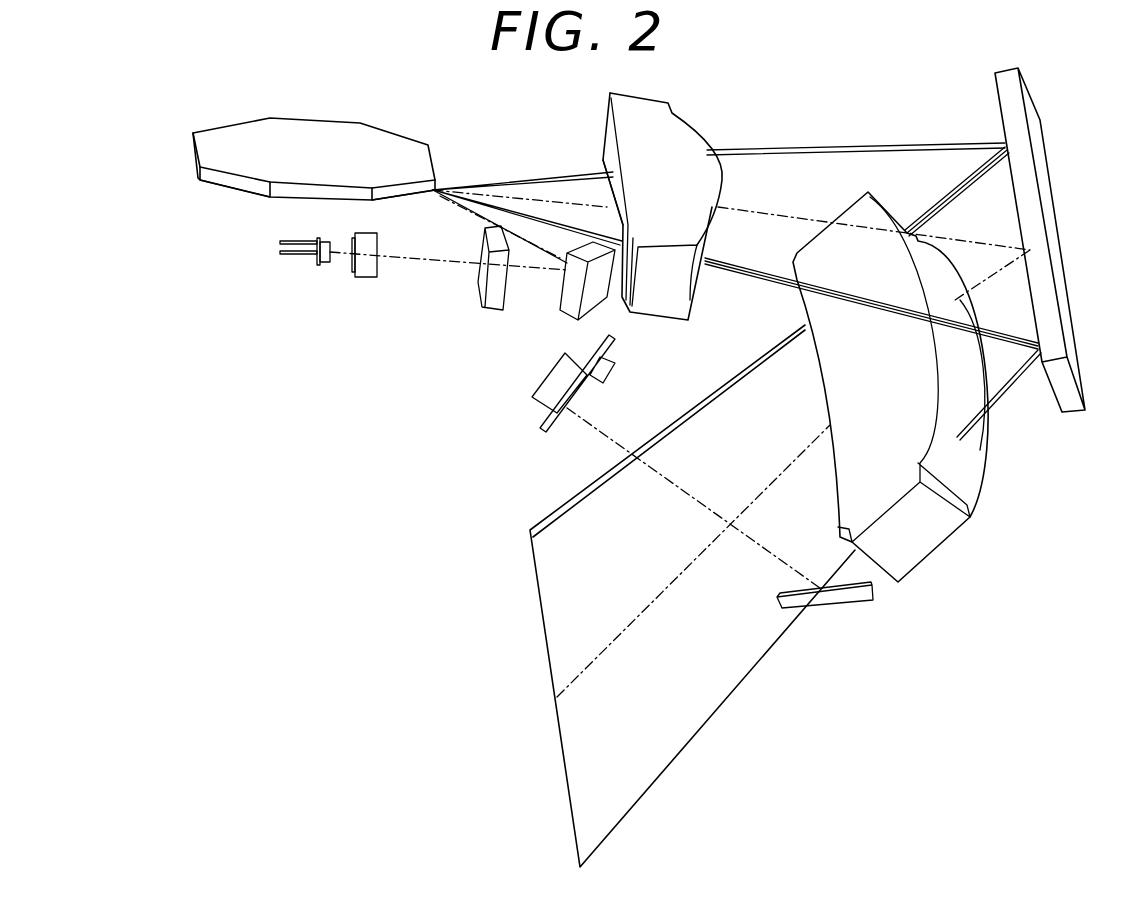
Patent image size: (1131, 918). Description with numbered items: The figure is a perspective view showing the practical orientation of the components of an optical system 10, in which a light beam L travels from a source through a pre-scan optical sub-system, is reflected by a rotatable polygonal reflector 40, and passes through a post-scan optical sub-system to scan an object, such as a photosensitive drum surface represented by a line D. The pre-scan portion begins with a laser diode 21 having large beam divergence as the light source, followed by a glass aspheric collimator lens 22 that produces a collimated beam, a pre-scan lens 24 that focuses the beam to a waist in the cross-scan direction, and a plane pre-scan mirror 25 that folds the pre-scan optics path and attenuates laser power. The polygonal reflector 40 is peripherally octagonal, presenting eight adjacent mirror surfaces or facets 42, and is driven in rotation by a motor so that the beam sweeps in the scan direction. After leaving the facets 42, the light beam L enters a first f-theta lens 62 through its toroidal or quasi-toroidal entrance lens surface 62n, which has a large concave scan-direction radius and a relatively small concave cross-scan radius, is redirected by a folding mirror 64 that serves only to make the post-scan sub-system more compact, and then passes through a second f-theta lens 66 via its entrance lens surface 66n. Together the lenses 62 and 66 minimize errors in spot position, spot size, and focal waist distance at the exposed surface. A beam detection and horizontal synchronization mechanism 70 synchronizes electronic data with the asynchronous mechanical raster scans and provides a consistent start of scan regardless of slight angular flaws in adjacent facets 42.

The optical system 10 is at (453, 495).
The laser diode 21 is at (317, 263).
The glass aspheric collimator lens 22 is at (367, 277).
The pre-scan lens 24 is at (493, 302).
The plane pre-scan mirror 25 is at (573, 298).
The rotatable polygonal reflector 40 is at (319, 158).
The mirror surfaces or facets 42 is at (302, 193).
The first f-theta lens 62 is at (637, 92).
The entrance lens surface 62n is at (603, 155).
The folding mirror 64 is at (1047, 192).
The second f-theta lens 66 is at (895, 353).
The entrance lens surface 66n is at (977, 432).
The beam detection and horizontal synchronization mechanism 70 is at (603, 397).
The light beam L is at (797, 143).
The line representing photosensitive drum surface D is at (545, 640).